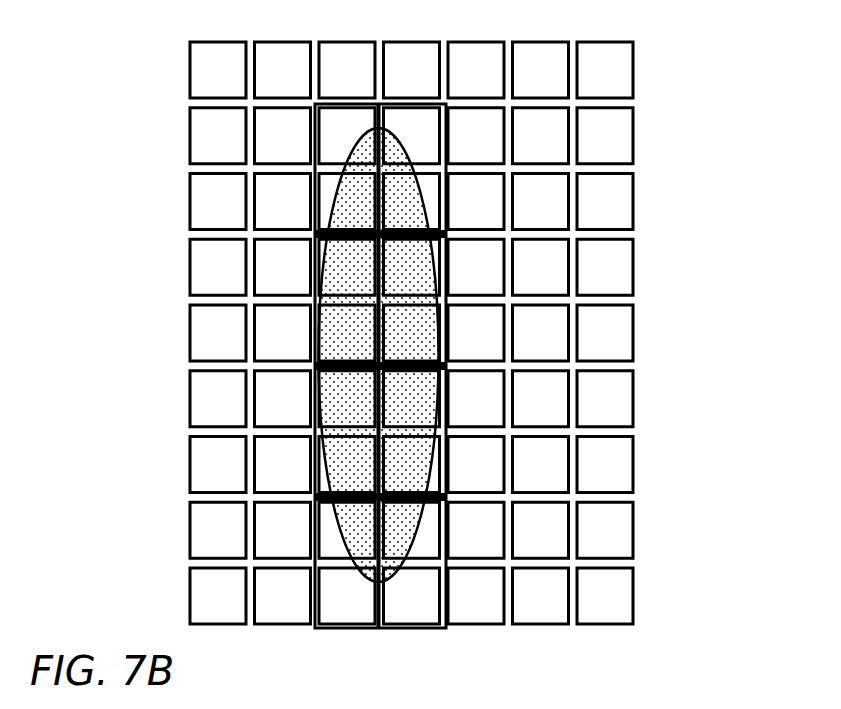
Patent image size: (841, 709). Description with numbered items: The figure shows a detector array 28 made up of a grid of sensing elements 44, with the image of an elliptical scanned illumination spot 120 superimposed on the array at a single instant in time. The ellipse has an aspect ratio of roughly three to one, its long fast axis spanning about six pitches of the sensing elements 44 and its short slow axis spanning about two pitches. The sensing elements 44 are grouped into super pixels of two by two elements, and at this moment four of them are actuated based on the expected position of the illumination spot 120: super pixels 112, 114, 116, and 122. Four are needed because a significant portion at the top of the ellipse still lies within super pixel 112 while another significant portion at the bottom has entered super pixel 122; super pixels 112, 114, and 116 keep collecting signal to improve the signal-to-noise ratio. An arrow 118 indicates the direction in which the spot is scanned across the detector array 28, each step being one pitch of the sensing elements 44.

The detector array 28 is at (105, 90).
The sensing elements 44 is at (633, 131).
The super pixel 112 is at (316, 134).
The super pixel 114 is at (316, 320).
The super pixel 116 is at (316, 458).
The arrow 118 is at (383, 601).
The illumination spot 120 is at (412, 540).
The super pixel 122 is at (316, 528).